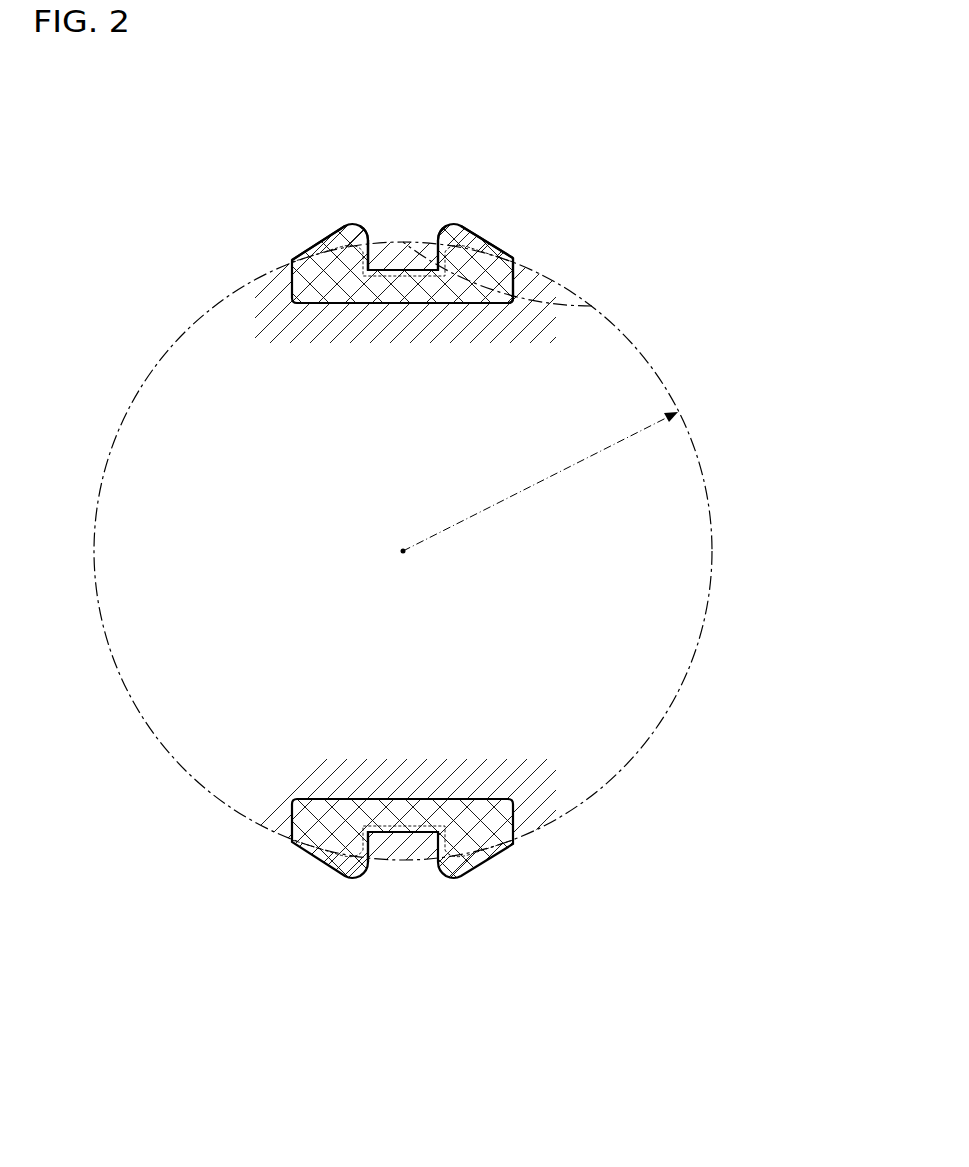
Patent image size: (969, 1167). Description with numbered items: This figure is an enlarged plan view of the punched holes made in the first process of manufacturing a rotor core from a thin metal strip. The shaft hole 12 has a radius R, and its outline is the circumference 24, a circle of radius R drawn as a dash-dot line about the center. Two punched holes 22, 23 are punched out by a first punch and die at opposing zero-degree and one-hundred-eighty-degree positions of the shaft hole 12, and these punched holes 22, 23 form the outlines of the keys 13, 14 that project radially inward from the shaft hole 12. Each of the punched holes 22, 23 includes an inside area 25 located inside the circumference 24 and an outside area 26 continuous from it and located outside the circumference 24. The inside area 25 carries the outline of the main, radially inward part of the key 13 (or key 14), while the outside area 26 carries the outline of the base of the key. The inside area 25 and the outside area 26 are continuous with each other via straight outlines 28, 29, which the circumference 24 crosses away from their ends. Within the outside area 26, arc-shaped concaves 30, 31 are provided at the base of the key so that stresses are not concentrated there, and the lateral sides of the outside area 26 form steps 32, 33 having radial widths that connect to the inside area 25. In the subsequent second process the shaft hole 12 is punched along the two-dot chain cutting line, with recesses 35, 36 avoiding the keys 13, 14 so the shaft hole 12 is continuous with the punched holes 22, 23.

The shaft hole 12 is at (127, 693).
The key 13 is at (390, 290).
The key 14 is at (400, 840).
The punched hole 22 is at (512, 170).
The punched hole 23 is at (512, 848).
The circumference 24 is at (592, 306).
The inside area 25 is at (423, 233).
The outside area 26 is at (476, 234).
The straight outline 28 is at (264, 290).
The straight outline 29 is at (525, 290).
The arc-shaped concave 30 is at (326, 300).
The arc-shaped concave 31 is at (467, 300).
The step 32 is at (290, 262).
The step 33 is at (519, 258).
The recess 35 is at (383, 233).
The recess 36 is at (375, 834).
The radius R is at (540, 481).